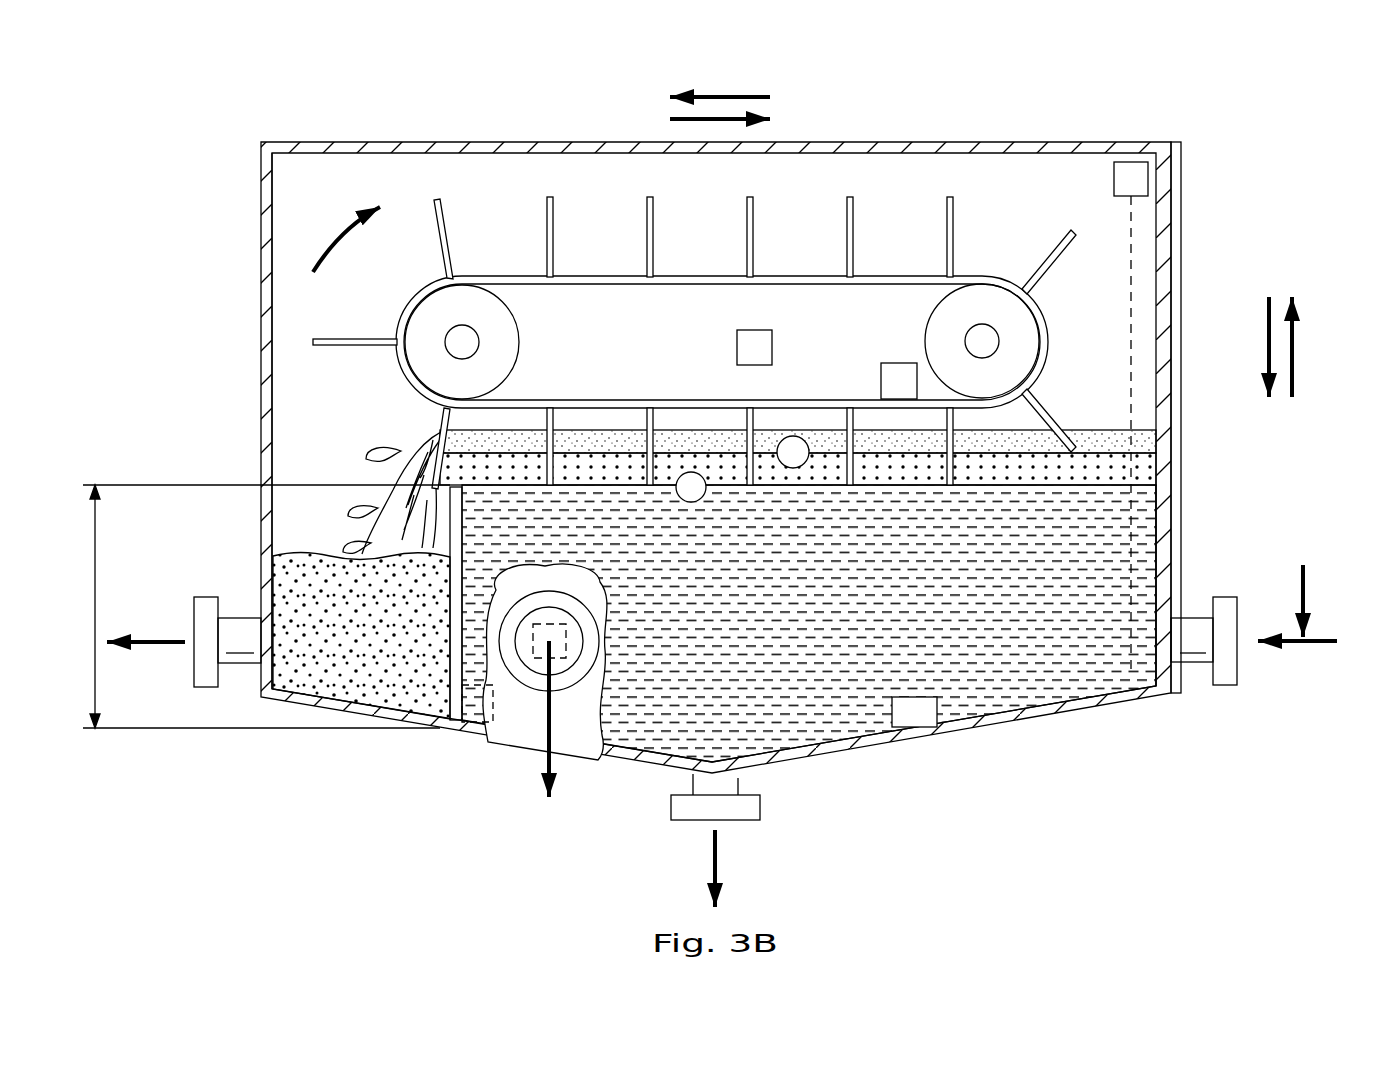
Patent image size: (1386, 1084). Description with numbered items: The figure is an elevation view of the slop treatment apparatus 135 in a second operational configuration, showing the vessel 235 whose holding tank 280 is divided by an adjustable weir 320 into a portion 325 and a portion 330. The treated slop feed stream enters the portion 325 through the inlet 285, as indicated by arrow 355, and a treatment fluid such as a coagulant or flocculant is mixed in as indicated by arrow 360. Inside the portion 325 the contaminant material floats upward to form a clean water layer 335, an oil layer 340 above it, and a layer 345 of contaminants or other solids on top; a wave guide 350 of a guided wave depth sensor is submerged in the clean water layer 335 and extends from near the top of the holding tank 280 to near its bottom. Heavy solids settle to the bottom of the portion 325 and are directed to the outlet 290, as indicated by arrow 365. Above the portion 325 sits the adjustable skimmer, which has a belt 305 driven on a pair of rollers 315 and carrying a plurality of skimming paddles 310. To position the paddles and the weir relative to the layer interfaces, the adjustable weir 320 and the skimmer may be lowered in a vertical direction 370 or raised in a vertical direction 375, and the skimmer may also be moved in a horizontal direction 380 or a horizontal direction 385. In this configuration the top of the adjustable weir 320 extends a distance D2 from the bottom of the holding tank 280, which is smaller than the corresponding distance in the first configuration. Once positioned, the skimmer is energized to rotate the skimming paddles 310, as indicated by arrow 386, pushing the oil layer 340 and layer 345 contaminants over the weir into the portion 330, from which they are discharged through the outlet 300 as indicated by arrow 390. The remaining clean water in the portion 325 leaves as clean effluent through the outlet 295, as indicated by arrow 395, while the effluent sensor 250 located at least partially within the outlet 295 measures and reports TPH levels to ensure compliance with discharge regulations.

The slop treatment apparatus 135 is at (338, 107).
The vessel 235 is at (262, 192).
The effluent sensor 250 is at (567, 641).
The holding tank 280 is at (262, 414).
The inlet 285 is at (1192, 665).
The outlet 290 is at (740, 785).
The outlet 295 is at (546, 580).
The outlet 300 is at (240, 617).
The belt 305 is at (618, 400).
The skimming paddles 310 is at (950, 212).
The rollers 315 is at (926, 340).
The adjustable weir 320 is at (450, 606).
The portion 325 is at (802, 646).
The portion 330 is at (349, 634).
The clean water layer 335 is at (1152, 512).
The oil layer 340 is at (1016, 478).
The layer of contaminants or other solids 345 is at (1078, 428).
The wave guide 350 is at (1131, 332).
The arrow 355 is at (1325, 645).
The arrow 360 is at (1306, 595).
The arrow 365 is at (716, 865).
The vertical direction 370 is at (1266, 340).
The vertical direction 375 is at (1296, 352).
The horizontal direction 380 is at (727, 94).
The horizontal direction 385 is at (678, 126).
The arrow 386 is at (338, 236).
The arrow 390 is at (150, 645).
The arrow 395 is at (552, 764).
The distance D2 is at (252, 606).